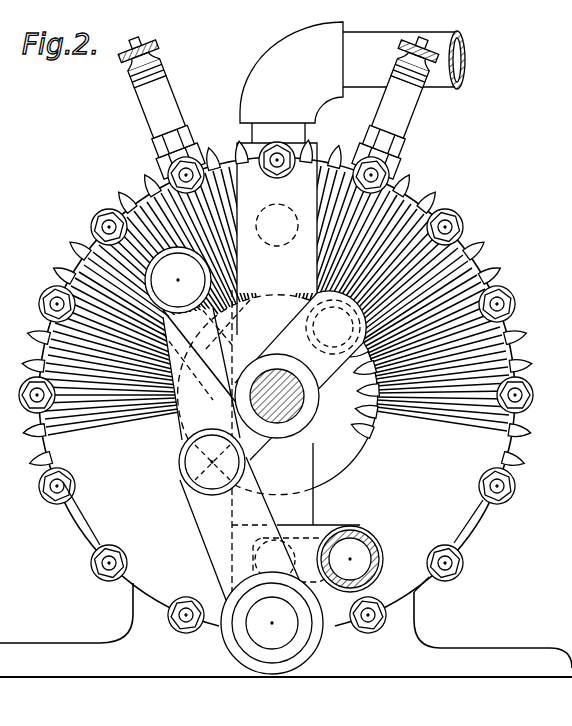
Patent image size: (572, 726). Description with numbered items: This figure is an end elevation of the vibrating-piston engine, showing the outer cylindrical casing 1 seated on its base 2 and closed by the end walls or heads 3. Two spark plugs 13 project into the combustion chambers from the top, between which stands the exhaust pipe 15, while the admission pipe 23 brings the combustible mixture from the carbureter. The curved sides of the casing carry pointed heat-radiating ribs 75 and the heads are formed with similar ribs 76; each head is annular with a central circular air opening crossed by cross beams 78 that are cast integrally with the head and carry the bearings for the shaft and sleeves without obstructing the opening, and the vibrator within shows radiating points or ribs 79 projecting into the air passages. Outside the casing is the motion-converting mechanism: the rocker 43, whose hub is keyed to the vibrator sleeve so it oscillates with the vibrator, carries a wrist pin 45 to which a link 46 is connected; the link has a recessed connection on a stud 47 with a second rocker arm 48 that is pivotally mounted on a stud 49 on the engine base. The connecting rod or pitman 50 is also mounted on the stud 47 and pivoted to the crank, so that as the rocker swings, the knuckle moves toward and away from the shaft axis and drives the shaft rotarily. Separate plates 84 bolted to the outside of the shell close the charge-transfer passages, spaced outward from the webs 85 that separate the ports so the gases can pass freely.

The outer cylindrical casing 1 is at (418, 197).
The base 2 is at (45, 647).
The end walls or heads 3 is at (496, 274).
The spark plug 13 is at (167, 110).
The exhaust pipe 15 is at (462, 52).
The admission pipe 23 is at (356, 550).
The rocker 43 is at (247, 313).
The wrist pin 45 is at (183, 280).
The link 46 is at (187, 392).
The stud 47 is at (190, 470).
The second rocker arm 48 is at (210, 523).
The stud 49 is at (265, 628).
The connecting rod or pitman 50 is at (253, 440).
The heat-radiating ribs 75 is at (122, 197).
The ribs 76 is at (465, 418).
The cross beams 78 is at (300, 490).
The radiating points or ribs 79 is at (383, 432).
The plates 84 is at (53, 500).
The webs 85 is at (473, 533).